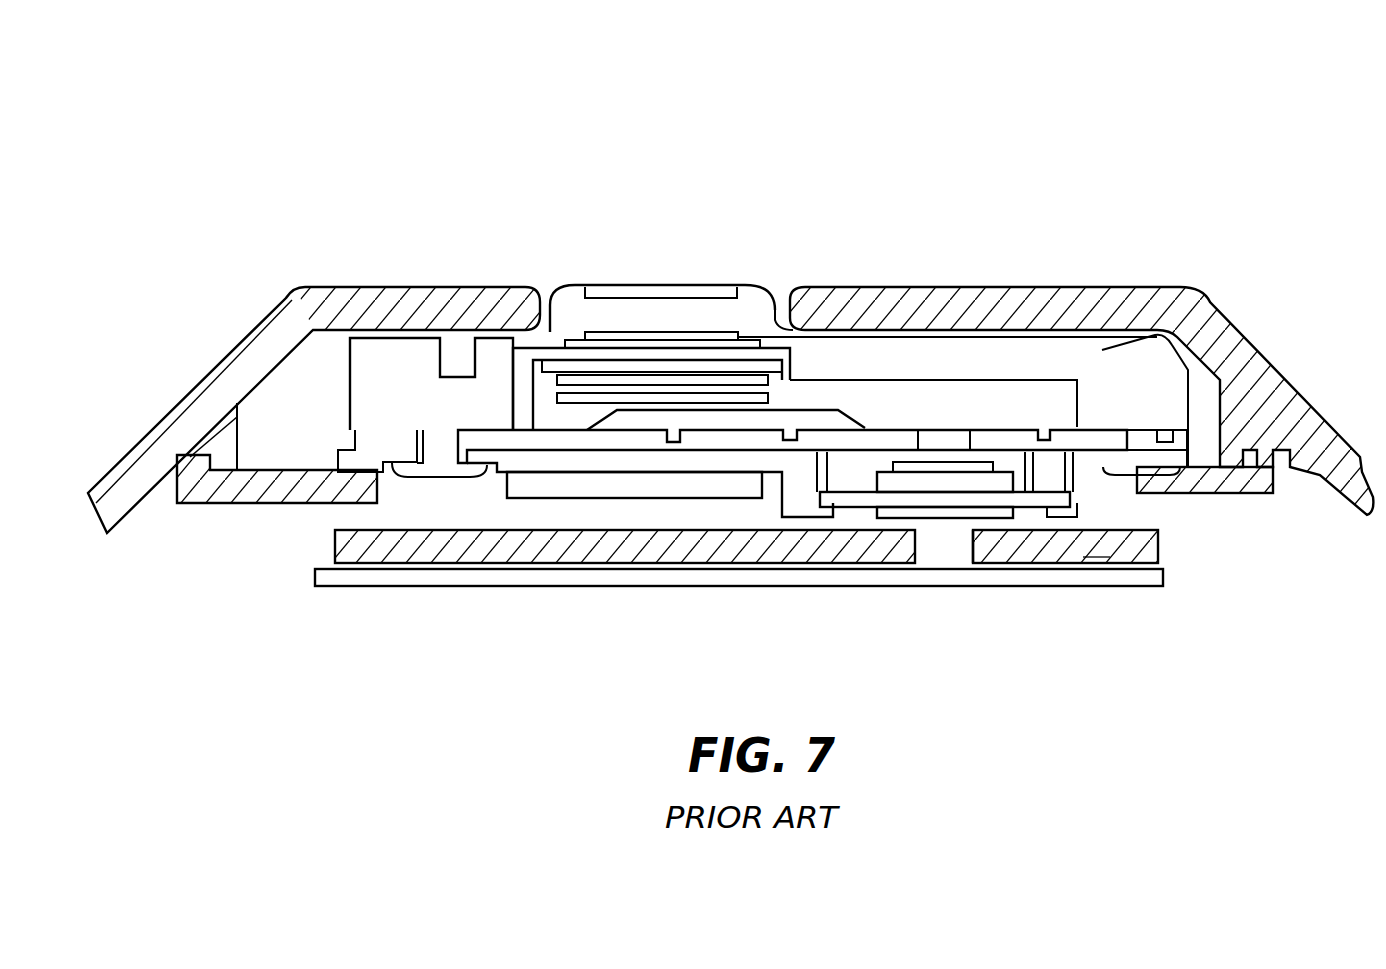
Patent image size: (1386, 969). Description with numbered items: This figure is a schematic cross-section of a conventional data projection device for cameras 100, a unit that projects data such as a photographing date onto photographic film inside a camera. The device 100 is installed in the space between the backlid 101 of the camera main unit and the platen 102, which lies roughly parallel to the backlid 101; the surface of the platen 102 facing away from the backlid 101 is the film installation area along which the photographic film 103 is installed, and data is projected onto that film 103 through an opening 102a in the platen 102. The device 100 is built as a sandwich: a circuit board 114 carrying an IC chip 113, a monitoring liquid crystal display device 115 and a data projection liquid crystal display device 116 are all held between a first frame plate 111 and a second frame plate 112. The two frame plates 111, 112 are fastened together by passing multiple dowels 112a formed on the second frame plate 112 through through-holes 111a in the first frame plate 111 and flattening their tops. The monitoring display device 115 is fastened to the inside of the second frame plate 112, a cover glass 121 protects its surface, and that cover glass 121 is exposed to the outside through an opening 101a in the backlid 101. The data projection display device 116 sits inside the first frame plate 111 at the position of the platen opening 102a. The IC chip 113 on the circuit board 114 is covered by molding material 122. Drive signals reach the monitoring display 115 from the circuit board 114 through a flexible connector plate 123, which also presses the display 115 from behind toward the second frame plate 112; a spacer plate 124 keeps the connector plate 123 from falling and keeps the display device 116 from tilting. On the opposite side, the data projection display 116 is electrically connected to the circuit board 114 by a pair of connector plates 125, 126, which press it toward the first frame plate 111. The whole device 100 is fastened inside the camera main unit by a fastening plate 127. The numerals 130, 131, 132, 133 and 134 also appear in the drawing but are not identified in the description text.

The data projection device for cameras 100 is at (920, 145).
The backlid 101 is at (232, 367).
The opening 101a is at (788, 287).
The platen 102 is at (347, 548).
The opening 102a is at (973, 535).
The photographic film 103 is at (1003, 578).
The first frame plate 111 is at (633, 463).
The through-holes 111a is at (455, 468).
The second frame plate 112 is at (1202, 288).
The dowels 112a is at (450, 470).
The IC chip 113 is at (715, 437).
The circuit board 114 is at (555, 447).
The monitoring liquid crystal display device 115 is at (697, 353).
The data projection liquid crystal display device 116 is at (862, 502).
The cover glass 121 is at (704, 306).
The molding material 122 is at (827, 420).
The flexible connector plate 123 is at (523, 382).
The spacer plate 124 is at (587, 400).
The connector plate 125 is at (843, 463).
The connector plate 126 is at (1038, 467).
The fastening plate 127 is at (200, 500).
The vibrator unit 130 is at (1278, 538).
The base plate 131 is at (993, 480).
The pad 132 is at (1087, 552).
The piezoelectric element 133 is at (932, 466).
The lower holder 134 is at (948, 518).